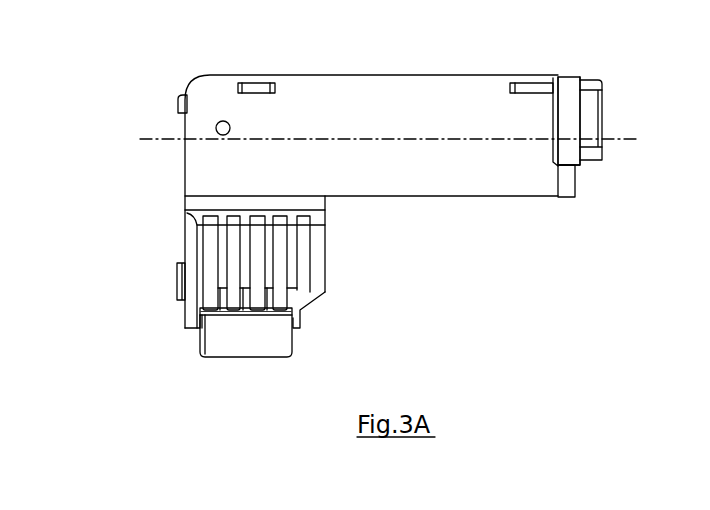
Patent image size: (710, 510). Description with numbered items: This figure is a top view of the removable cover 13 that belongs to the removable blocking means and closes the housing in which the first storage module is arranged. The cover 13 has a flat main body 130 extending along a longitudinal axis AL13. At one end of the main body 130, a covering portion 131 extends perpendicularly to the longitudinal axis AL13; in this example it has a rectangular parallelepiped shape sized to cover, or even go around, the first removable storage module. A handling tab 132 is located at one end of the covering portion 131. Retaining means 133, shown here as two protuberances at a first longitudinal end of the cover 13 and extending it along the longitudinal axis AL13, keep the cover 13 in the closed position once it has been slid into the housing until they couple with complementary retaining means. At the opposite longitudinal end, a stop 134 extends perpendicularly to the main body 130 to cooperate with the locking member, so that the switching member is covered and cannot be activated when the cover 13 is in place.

The removable cover 13 is at (543, 255).
The main body 130 is at (408, 124).
The covering portion 131 is at (272, 248).
The handling tab 132 is at (270, 330).
The retaining means 133 is at (178, 105).
The stop 134 is at (580, 165).
The longitudinal axis AL13 is at (419, 141).